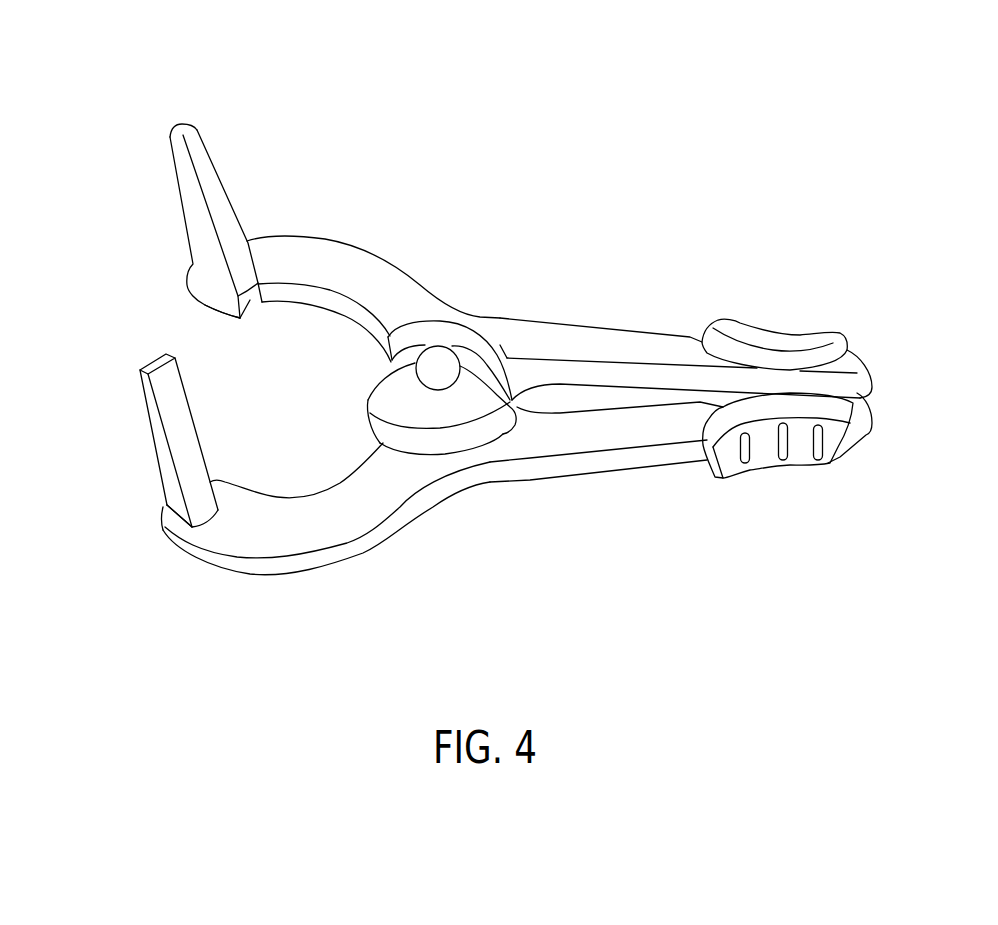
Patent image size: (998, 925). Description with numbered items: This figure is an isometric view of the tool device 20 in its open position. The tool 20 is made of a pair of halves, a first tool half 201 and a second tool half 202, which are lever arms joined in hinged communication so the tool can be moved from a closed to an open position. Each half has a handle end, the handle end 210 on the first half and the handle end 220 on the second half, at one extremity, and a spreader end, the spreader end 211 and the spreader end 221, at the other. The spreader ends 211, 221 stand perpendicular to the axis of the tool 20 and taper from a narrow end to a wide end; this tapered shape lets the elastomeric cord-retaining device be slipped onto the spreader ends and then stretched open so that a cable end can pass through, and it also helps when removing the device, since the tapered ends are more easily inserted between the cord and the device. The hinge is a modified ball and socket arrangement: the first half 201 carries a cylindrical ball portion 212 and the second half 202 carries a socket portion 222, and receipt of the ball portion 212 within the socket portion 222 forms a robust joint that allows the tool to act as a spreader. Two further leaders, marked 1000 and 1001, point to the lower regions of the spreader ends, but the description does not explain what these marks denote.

The tool device 20 is at (330, 80).
The first tool half 201 is at (403, 287).
The second tool half 202 is at (372, 510).
The handle end 210 is at (820, 342).
The handle end 220 is at (847, 463).
The spreader end 211 is at (187, 152).
The spreader end 221 is at (138, 380).
The cylindrical ball portion 212 is at (440, 370).
The socket portion 222 is at (473, 407).
The first gripping surface 1000 is at (245, 297).
The second gripping surface 1001 is at (218, 510).